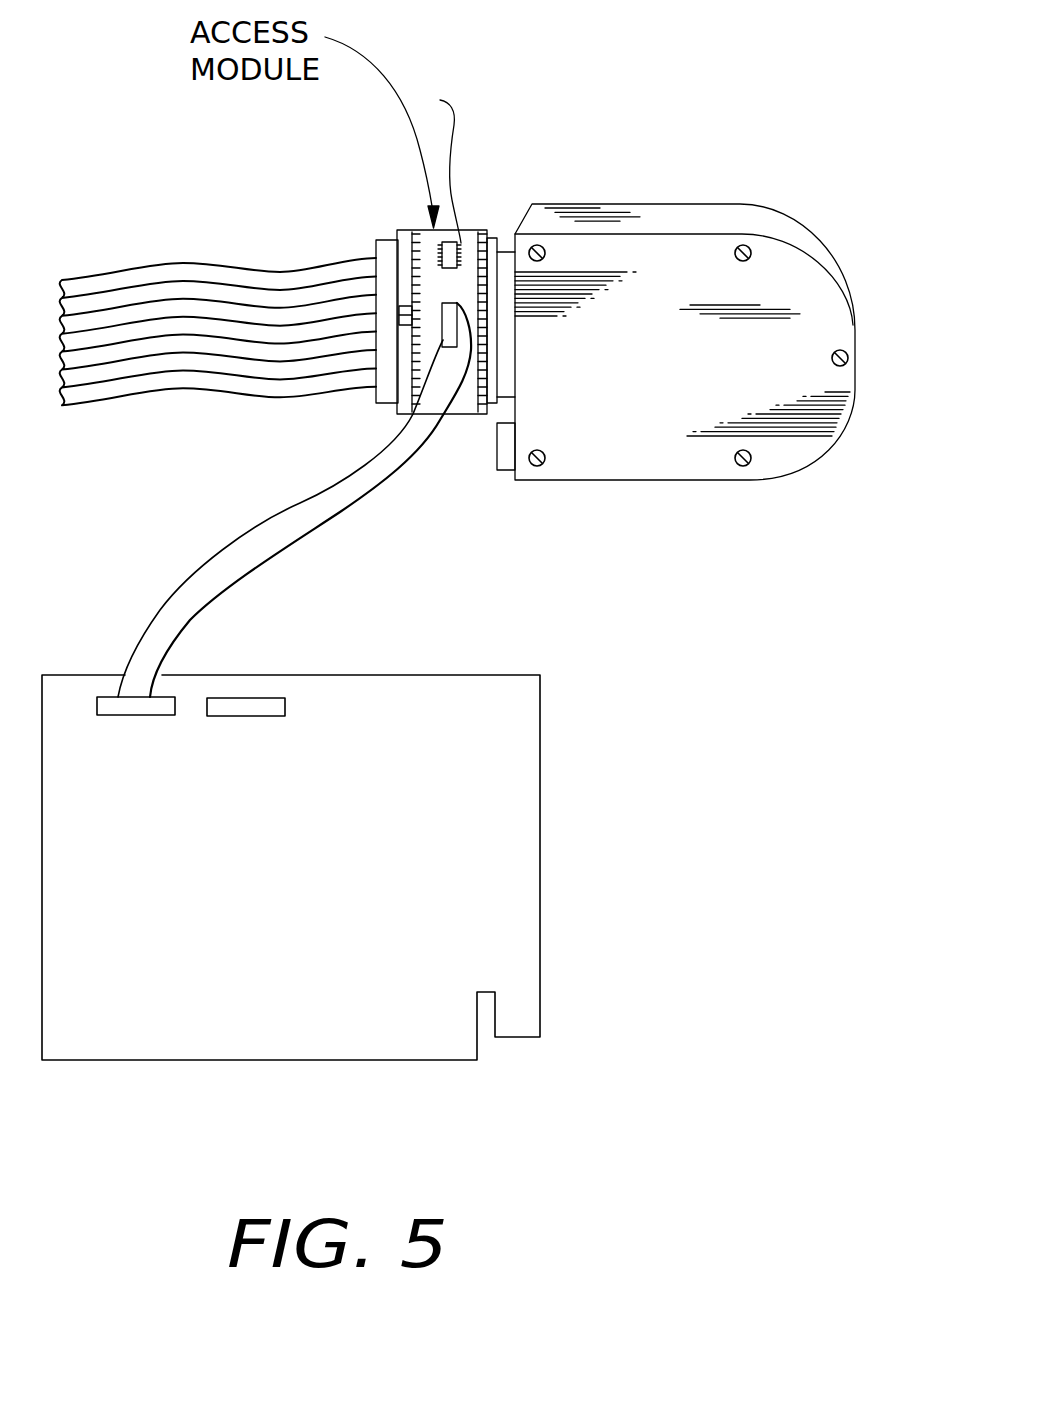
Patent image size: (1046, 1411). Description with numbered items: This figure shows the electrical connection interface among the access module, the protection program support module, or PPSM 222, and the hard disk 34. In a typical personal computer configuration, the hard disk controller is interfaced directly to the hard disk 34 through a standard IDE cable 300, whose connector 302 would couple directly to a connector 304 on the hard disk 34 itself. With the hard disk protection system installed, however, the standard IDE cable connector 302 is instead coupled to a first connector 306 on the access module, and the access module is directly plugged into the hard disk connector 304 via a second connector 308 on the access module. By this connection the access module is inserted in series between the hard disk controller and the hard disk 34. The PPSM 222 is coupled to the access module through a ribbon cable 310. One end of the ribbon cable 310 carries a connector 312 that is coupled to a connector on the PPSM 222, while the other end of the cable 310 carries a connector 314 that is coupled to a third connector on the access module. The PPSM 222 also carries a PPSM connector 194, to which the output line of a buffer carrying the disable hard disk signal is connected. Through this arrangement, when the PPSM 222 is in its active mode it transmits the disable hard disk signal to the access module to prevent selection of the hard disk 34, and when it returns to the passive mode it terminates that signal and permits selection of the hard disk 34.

The IDE cable 300 is at (167, 270).
The IDE cable connector 302 is at (388, 240).
The hard disk connector 304 is at (505, 252).
The first connector 306 is at (408, 243).
The second connector 308 is at (495, 242).
The ribbon cable 310 is at (320, 510).
The connector 312 is at (137, 715).
The connector 314 is at (418, 402).
The hard disk 34 is at (768, 293).
The PPSM connector 194 is at (247, 717).
The PPSM 222 is at (450, 865).